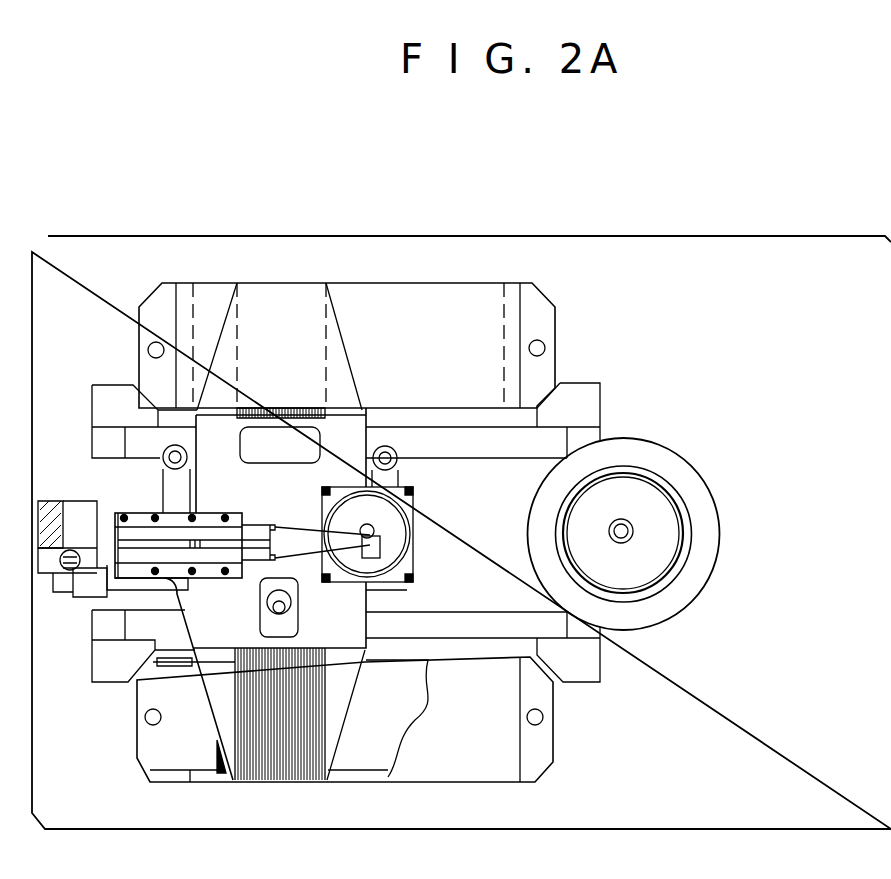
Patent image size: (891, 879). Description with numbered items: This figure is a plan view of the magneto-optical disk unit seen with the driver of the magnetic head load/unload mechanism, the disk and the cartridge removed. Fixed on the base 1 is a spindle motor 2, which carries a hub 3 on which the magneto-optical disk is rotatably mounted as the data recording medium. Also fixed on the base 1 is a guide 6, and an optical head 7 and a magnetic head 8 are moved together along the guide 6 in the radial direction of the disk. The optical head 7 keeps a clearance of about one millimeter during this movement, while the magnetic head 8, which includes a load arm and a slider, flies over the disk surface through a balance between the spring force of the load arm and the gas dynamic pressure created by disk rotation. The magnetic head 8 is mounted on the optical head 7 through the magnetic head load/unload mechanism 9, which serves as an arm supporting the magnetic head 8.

The base 1 is at (797, 262).
The spindle motor 2 is at (685, 478).
The hub 3 is at (626, 470).
The guide 6 is at (455, 437).
The optical head 7 is at (361, 512).
The magnetic head 8 is at (302, 532).
The magnetic head load/unload mechanism 9 is at (157, 507).